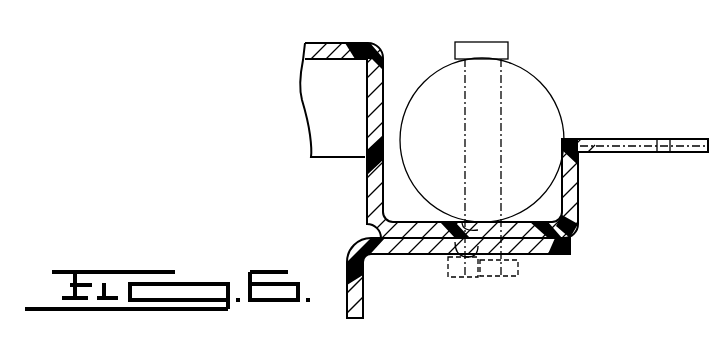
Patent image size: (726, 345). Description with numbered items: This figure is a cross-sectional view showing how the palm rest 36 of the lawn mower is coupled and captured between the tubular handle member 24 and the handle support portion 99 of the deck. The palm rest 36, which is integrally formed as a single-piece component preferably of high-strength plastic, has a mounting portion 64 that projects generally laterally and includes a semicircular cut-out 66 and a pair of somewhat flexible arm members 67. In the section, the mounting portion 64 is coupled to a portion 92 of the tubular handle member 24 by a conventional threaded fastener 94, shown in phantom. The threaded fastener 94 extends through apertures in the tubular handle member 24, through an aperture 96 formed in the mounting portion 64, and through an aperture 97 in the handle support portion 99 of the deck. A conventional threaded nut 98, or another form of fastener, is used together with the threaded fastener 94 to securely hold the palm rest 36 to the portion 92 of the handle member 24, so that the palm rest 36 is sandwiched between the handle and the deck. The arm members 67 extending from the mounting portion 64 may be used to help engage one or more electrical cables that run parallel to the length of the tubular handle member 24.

The tubular handle member 24 is at (565, 108).
The palm rest 36 is at (299, 122).
The mounting portion 64 is at (584, 232).
The semicircular cut-out 66 is at (405, 155).
The arm members 67 is at (614, 138).
The portion of the tubular handle member 92 is at (413, 86).
The threaded fastener 94 is at (513, 62).
The aperture 96 is at (468, 222).
The aperture 97 is at (472, 260).
The threaded nut 98 is at (492, 262).
The handle support portion 99 is at (563, 254).